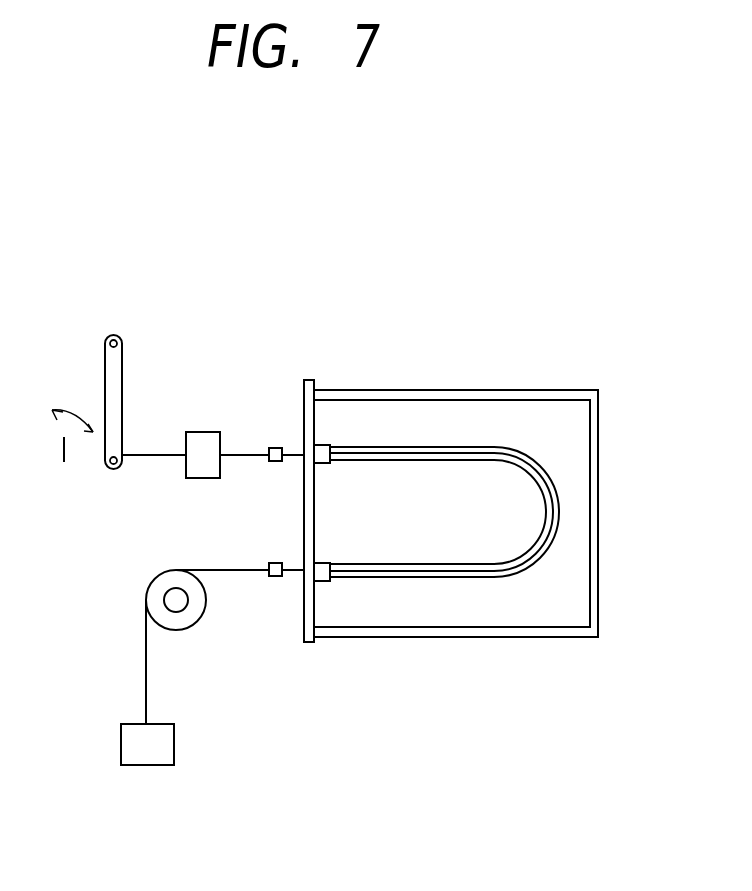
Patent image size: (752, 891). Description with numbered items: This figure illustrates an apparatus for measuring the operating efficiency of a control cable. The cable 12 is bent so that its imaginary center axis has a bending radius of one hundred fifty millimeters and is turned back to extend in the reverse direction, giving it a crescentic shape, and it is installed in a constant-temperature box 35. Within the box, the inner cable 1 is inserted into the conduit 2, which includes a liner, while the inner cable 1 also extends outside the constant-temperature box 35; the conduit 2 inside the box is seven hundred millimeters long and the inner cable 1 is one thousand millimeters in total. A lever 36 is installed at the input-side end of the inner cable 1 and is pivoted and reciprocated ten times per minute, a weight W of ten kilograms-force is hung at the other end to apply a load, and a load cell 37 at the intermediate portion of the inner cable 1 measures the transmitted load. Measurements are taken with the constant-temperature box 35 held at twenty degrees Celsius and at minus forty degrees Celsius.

The inner cable 1 is at (290, 455).
The conduit 2 is at (497, 578).
The cable 12 is at (560, 543).
The constant-temperature box 35 is at (456, 397).
The lever 36 is at (118, 370).
The load cell 37 is at (203, 438).
The weight W is at (146, 758).